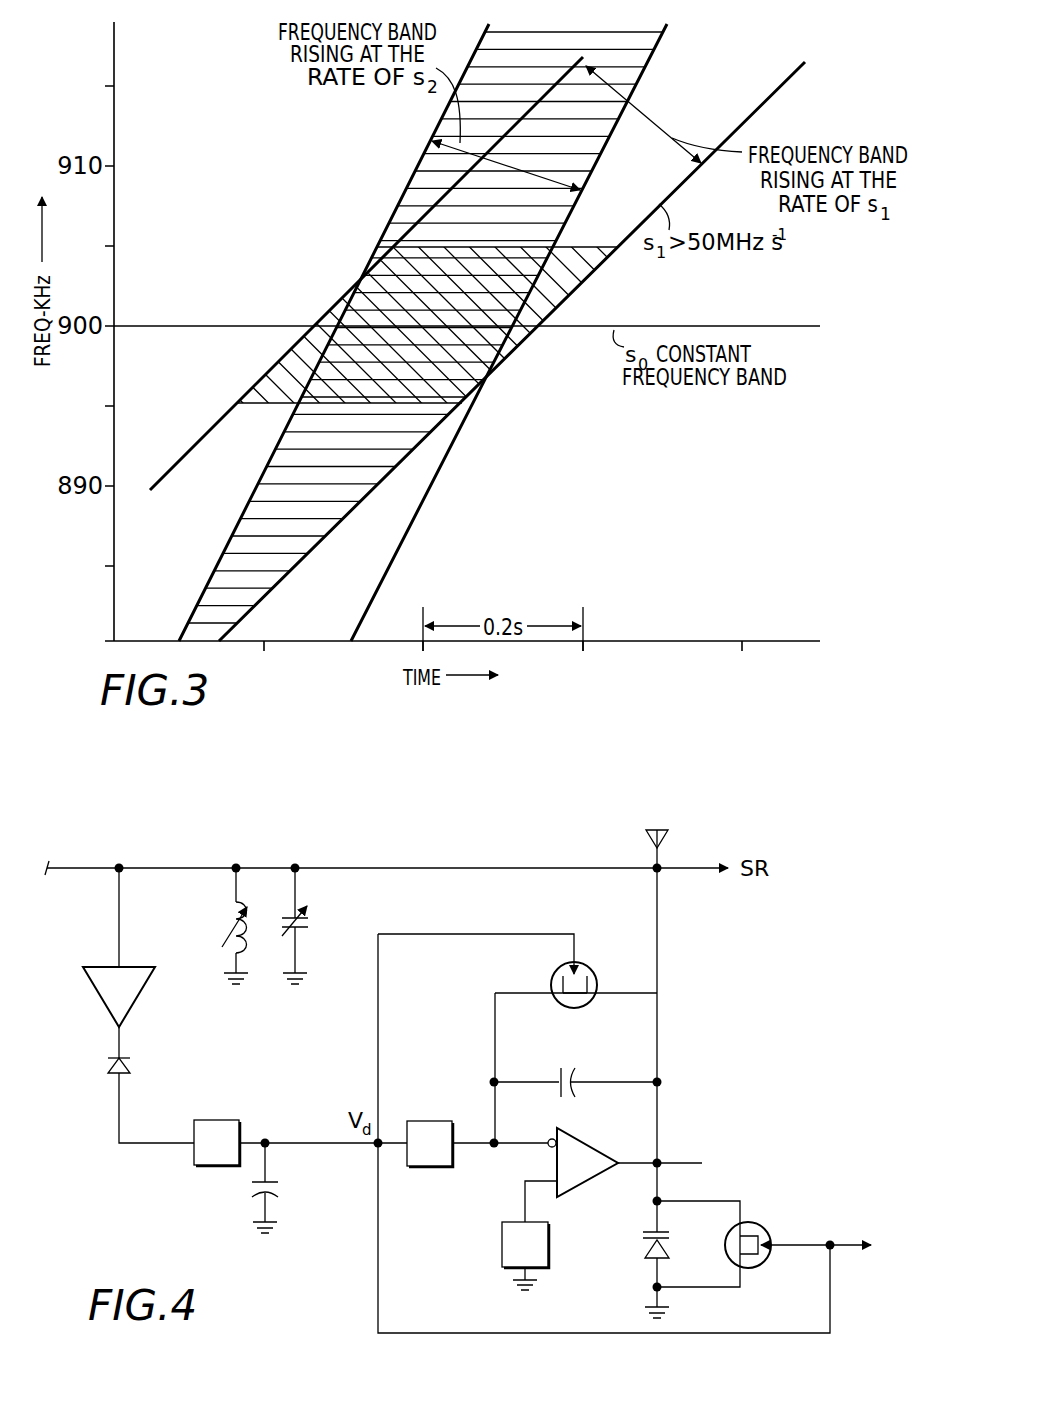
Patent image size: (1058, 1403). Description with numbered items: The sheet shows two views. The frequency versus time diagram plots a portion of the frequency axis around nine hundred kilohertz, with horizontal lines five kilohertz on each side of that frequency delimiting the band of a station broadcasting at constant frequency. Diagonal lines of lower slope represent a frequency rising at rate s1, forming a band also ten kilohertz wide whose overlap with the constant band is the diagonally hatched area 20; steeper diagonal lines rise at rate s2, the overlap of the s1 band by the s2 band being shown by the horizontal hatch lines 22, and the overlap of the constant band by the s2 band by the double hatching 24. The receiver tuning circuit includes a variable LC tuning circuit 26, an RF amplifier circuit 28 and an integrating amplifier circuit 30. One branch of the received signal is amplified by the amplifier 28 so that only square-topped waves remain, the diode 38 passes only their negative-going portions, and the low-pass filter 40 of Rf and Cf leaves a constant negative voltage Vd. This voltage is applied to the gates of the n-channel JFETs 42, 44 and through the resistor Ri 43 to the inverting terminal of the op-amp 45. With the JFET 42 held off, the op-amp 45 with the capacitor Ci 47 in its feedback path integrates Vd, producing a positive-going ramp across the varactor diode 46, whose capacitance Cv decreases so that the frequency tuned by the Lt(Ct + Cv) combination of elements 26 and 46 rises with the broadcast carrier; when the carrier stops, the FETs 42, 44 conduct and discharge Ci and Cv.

In FIG. 3, the diagonally hatched area 20 is at (314, 332).
In FIG. 3, the horizontal hatch lines 22 is at (603, 151).
In FIG. 3, the double hatching 24 is at (487, 378).
In FIG. 4, the variable LC tuning circuit 26 is at (275, 1000).
In FIG. 4, the RF amplifier circuit 28 is at (161, 1002).
In FIG. 4, the integrating amplifier circuit 30 is at (554, 1187).
In FIG. 4, the diode 38 is at (107, 1066).
In FIG. 4, the low-pass filter 40 is at (215, 1187).
In FIG. 4, the n-channel JFET 42 is at (562, 1007).
In FIG. 4, the resistor Ri 43 is at (420, 1121).
In FIG. 4, the n-channel JFET 44 is at (762, 1266).
In FIG. 4, the op-amp 45 is at (583, 1185).
In FIG. 4, the varactor diode 46 is at (642, 1249).
In FIG. 4, the capacitor Ci 47 is at (569, 1070).